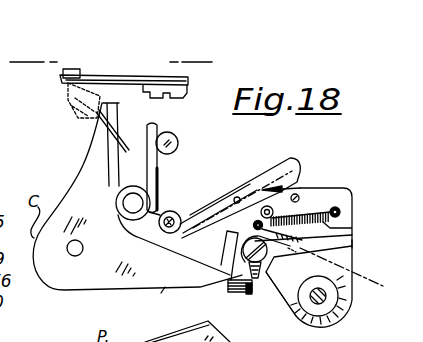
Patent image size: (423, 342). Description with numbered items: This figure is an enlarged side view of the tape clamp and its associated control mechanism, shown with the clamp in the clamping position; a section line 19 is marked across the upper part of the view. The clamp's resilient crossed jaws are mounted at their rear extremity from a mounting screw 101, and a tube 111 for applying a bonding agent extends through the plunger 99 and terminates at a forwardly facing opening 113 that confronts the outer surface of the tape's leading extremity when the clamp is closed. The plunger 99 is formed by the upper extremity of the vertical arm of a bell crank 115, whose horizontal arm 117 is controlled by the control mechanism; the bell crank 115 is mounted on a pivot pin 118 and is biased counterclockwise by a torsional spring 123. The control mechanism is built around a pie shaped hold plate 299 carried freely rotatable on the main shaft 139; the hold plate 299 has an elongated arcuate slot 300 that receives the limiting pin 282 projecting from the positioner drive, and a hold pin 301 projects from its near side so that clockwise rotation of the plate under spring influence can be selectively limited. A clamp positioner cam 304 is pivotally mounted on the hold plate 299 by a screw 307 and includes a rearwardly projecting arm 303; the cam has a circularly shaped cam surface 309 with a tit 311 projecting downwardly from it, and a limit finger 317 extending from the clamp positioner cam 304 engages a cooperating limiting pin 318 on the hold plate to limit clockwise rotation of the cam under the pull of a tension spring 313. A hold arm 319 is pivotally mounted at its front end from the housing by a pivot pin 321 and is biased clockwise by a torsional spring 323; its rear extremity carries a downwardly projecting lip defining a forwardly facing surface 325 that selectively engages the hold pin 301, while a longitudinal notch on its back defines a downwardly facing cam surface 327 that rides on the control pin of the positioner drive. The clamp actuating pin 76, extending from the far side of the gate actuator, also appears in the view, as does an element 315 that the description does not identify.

The section line 19- 19 is at (204, 60).
The clamp actuating pin 76 is at (360, 274).
The plunger 99 is at (73, 69).
The mounting screw 101 is at (176, 97).
The tube 111 is at (116, 136).
The forwardly facing opening 113 is at (58, 75).
The bell crank 115 is at (82, 164).
The horizontal arm 117 is at (163, 299).
The pivot pin 118 is at (72, 256).
The torsional spring 123 is at (153, 165).
The main shaft 139 is at (330, 303).
The limiting pin 282 is at (266, 206).
The hold plate 299 is at (353, 262).
The elongated arcuate slot 300 is at (258, 220).
The hold pin 301 is at (353, 189).
The rearwardly projecting arm 303 is at (298, 246).
The clamp positioner cam 304 is at (352, 244).
The screw 307 is at (265, 254).
The cam surface 309 is at (250, 294).
The tit 311 is at (276, 305).
The tension spring 313 is at (352, 226).
The spring anchor pin 315 is at (341, 212).
The limit finger 317 is at (235, 292).
The limiting pin 318 is at (228, 232).
The hold arm 319 is at (317, 166).
The pivot pin 321 is at (160, 228).
The torsional spring 323 is at (202, 211).
The forwardly facing surface 325 is at (284, 189).
The downwardly facing cam surface 327 is at (186, 240).